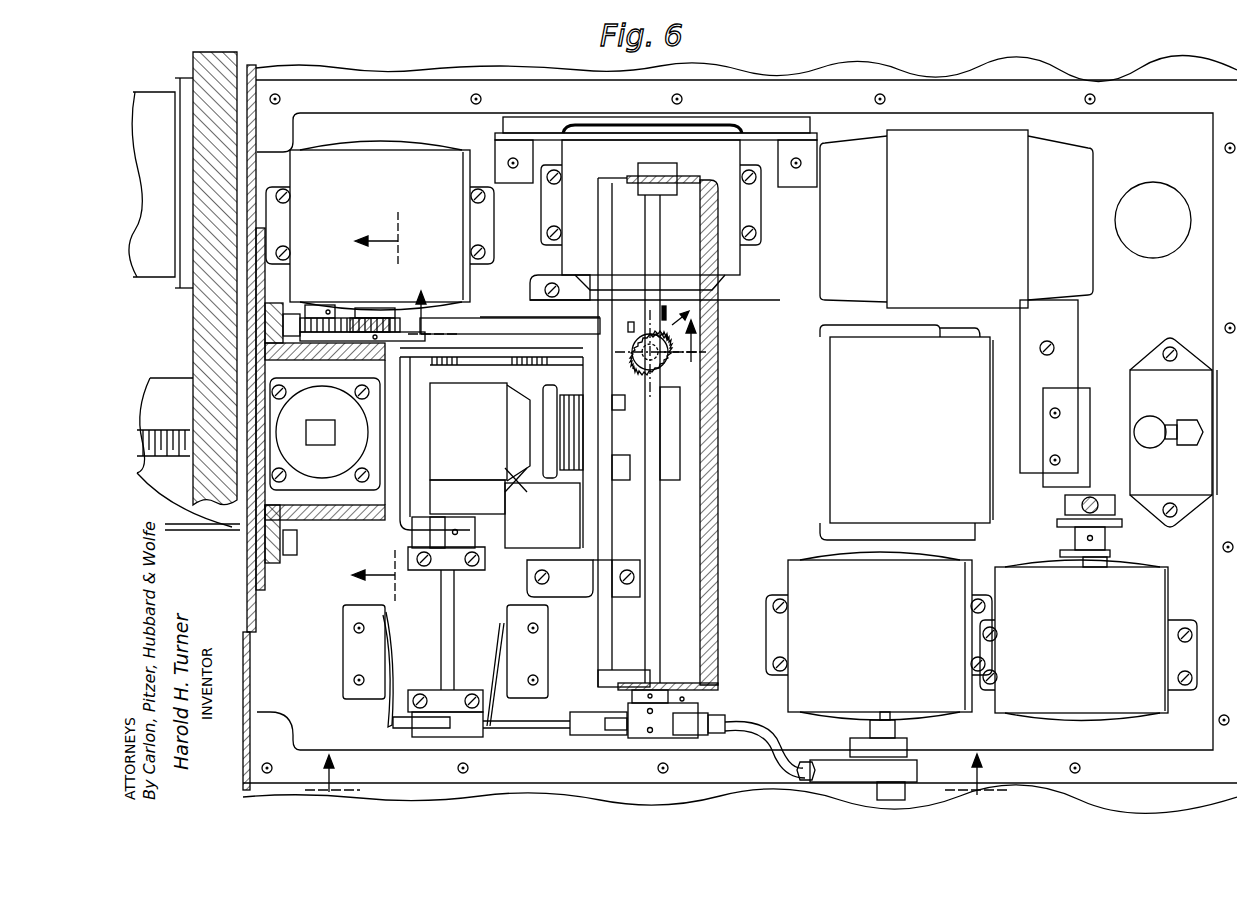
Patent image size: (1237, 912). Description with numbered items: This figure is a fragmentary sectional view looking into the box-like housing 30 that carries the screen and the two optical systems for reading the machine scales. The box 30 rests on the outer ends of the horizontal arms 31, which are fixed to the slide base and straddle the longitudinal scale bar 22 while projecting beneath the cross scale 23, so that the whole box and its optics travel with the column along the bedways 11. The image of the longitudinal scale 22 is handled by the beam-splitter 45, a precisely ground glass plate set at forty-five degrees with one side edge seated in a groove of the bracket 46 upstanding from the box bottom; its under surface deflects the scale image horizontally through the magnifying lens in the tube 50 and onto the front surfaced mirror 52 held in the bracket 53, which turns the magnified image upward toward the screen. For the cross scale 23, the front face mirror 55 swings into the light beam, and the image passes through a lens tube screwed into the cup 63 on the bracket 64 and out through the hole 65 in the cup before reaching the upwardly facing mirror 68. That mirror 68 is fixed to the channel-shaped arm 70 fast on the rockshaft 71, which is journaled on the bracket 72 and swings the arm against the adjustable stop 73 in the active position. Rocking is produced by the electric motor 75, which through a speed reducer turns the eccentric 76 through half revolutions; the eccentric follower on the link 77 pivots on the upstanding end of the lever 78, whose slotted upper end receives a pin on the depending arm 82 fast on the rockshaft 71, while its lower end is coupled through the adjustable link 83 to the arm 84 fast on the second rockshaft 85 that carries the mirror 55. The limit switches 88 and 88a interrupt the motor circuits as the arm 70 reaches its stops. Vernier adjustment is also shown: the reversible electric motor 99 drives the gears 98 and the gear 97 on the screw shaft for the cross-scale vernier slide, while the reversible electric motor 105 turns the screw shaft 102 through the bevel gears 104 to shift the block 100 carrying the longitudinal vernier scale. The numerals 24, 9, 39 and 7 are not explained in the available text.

The horizontal arms 31 is at (157, 97).
The drum 24 is at (167, 385).
The longitudinal scale bar 22 is at (170, 430).
The box-like housing 30 is at (258, 577).
The cross scale 23 is at (250, 600).
The reversible electric motor 99 is at (445, 152).
The bedways 11 is at (392, 406).
The gear 97 is at (312, 318).
The gears 98 is at (363, 318).
The section line 9 is at (557, 333).
The reversible electric motor 105 is at (575, 250).
The bevel gears 104 is at (659, 346).
The mirror 68 is at (702, 600).
The channel-shaped arm 70 is at (690, 683).
The bracket 72 is at (599, 622).
The rockshaft 71 is at (661, 633).
The bracket 64 is at (337, 502).
The cup 63 is at (340, 395).
The hole 65 is at (326, 421).
The screw shaft 102 is at (491, 448).
The block 100 is at (498, 372).
The beam-splitter 45 is at (526, 444).
The bracket 46 is at (516, 508).
The tube 50 is at (563, 441).
The front face mirror 55 is at (436, 543).
The rockshaft 85 is at (452, 632).
The arm 84 is at (402, 729).
The limit switch 88a is at (348, 668).
The limit switch 88 is at (548, 660).
The adjustable link 83 is at (555, 723).
The arm 82 is at (645, 738).
The lever 78 is at (678, 735).
The link 77 is at (772, 745).
The eccentric 76 is at (900, 752).
The electric motor 75 is at (946, 703).
The switch assembly 39 is at (1160, 546).
The front surfaced mirror 52 is at (830, 357).
The bracket 53 is at (836, 330).
The adjustable stop 73 is at (1135, 432).
The section line 7 is at (656, 774).